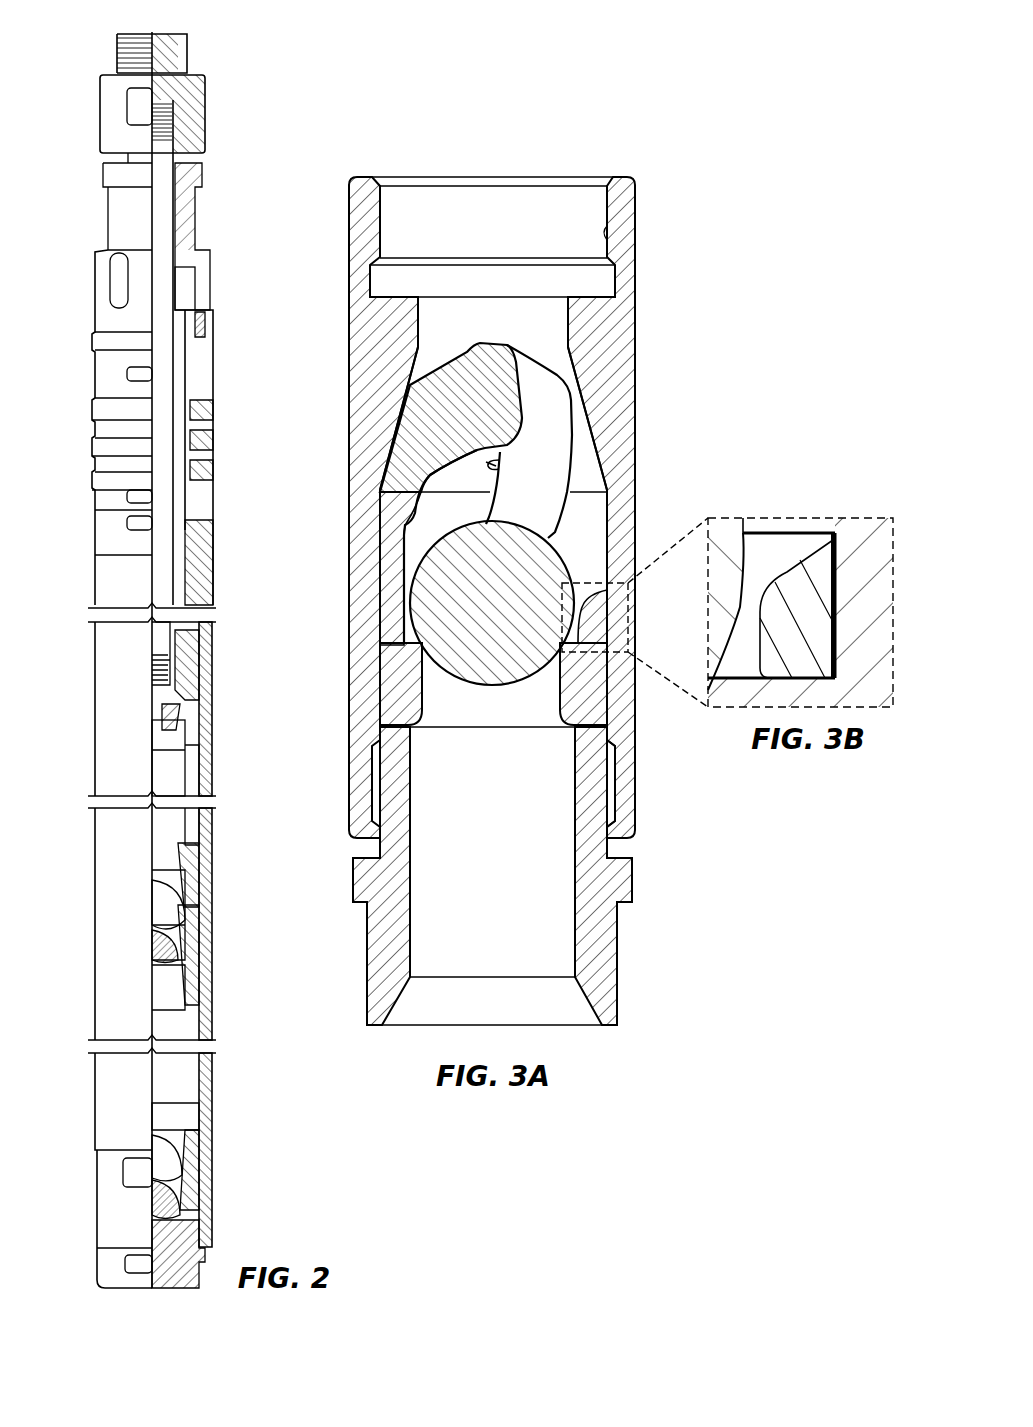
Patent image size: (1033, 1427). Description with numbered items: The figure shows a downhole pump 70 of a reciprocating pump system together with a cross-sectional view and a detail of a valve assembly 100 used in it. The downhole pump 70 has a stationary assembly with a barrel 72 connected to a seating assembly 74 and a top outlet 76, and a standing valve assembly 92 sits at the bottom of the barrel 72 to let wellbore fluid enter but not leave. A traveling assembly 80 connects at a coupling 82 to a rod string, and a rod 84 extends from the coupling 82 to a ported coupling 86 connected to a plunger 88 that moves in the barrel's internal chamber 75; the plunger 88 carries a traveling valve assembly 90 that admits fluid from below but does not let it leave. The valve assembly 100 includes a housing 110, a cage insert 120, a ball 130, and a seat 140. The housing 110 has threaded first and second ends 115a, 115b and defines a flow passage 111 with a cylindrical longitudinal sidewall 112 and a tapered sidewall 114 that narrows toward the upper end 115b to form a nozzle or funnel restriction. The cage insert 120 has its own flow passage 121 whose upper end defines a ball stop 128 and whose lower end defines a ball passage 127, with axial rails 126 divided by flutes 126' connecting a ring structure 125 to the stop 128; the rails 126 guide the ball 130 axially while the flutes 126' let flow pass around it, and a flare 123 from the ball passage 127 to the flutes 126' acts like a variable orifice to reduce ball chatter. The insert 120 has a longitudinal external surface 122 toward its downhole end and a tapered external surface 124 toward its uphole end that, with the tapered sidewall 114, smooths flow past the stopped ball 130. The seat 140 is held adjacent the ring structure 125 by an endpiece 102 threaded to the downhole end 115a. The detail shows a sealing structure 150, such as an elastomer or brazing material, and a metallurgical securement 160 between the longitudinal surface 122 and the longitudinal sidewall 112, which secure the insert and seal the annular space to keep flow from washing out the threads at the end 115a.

In FIG. 2, the downhole pump 70 is at (290, 100).
In FIG. 2, the barrel 72 is at (90, 733).
In FIG. 2, the seating assembly 74 is at (93, 455).
In FIG. 2, the internal chamber 75 is at (190, 652).
In FIG. 2, the top outlet 76 is at (97, 325).
In FIG. 2, the traveling assembly 80 is at (92, 127).
In FIG. 2, the coupling 82 is at (205, 100).
In FIG. 2, the rod 84 is at (177, 222).
In FIG. 2, the ported coupling 86 is at (182, 702).
In FIG. 2, the plunger 88 is at (193, 816).
In FIG. 2, the traveling valve assembly 90 is at (207, 913).
In FIG. 2, the standing valve assembly 92 is at (214, 1178).
In FIG. 3A, the valve assembly 100 is at (699, 194).
In FIG. 3A, the endpiece 102 is at (634, 893).
In FIG. 3A, the housing 110 is at (637, 300).
In FIG. 3A, the flow passage 111 is at (489, 208).
In FIG. 3A, the longitudinal sidewall 112 is at (605, 508).
In FIG. 3B, the longitudinal sidewall 112 is at (832, 531).
In FIG. 3A, the tapered sidewall 114 is at (567, 375).
In FIG. 3A, the first end 115a is at (615, 790).
In FIG. 3A, the second end 115b is at (602, 233).
In FIG. 3A, the cage insert 120 is at (366, 510).
In FIG. 3A, the flow passage 121 is at (538, 388).
In FIG. 3A, the longitudinal external surface 122 is at (392, 560).
In FIG. 3A, the flare 123 is at (617, 583).
In FIG. 3A, the tapered external surface 124 is at (393, 424).
In FIG. 3A, the ring structure 125 is at (392, 628).
In FIG. 3B, the ring structure 125 is at (802, 626).
In FIG. 3A, the axial rails 126 is at (498, 441).
In FIG. 3A, the flutes 126' is at (601, 450).
In FIG. 3A, the ball passage 127 is at (393, 656).
In FIG. 3A, the ball stop 128 is at (484, 462).
In FIG. 3A, the ball 130 is at (468, 614).
In FIG. 3A, the seat 140 is at (613, 716).
In FIG. 3B, the sealing structure 150 is at (841, 547).
In FIG. 3B, the metallurgical securement 160 is at (838, 600).